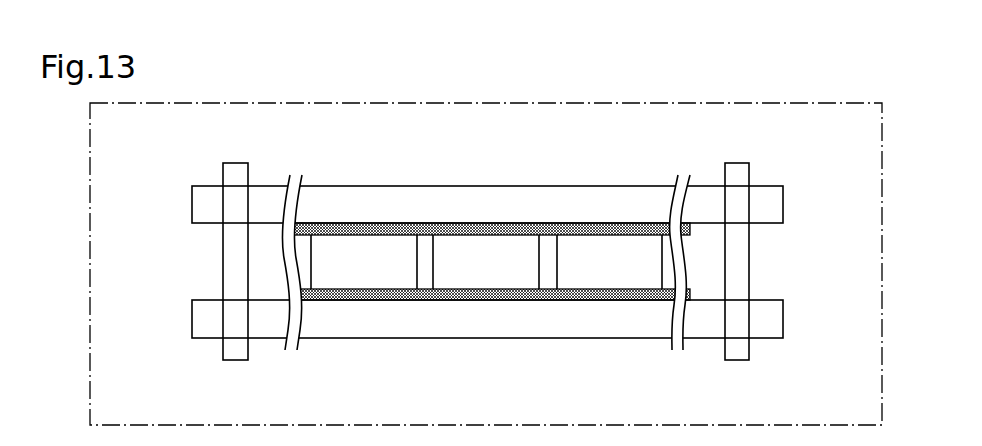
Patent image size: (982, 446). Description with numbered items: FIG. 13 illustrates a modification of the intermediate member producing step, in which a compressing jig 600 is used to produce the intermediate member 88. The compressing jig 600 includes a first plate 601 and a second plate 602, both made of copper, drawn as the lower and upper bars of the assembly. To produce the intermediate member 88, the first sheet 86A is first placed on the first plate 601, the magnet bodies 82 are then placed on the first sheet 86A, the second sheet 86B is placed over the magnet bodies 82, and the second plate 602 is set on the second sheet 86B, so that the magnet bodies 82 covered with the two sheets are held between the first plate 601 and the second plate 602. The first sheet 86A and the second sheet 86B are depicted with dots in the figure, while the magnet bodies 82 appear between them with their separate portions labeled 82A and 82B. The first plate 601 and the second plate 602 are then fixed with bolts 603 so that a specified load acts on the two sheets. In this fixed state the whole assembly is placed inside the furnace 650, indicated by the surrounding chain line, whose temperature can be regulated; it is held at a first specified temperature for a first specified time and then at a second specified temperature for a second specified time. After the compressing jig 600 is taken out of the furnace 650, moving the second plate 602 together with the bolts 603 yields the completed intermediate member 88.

The magnet bodies 82 is at (490, 276).
The spacer plate portion 82A is at (340, 220).
The partition wall 82B is at (421, 280).
The first sheet 86A is at (365, 300).
The second sheet 86B is at (618, 220).
The intermediate member 88 is at (280, 267).
The compressing jig 600 is at (797, 162).
The first plate 601 is at (485, 330).
The second plate 602 is at (365, 198).
The bolts 603 is at (233, 352).
The furnace 650 is at (687, 103).